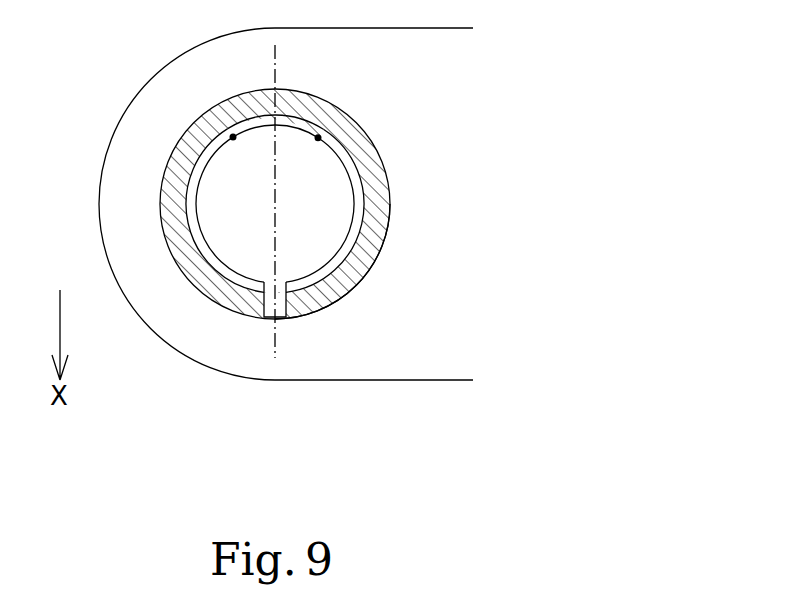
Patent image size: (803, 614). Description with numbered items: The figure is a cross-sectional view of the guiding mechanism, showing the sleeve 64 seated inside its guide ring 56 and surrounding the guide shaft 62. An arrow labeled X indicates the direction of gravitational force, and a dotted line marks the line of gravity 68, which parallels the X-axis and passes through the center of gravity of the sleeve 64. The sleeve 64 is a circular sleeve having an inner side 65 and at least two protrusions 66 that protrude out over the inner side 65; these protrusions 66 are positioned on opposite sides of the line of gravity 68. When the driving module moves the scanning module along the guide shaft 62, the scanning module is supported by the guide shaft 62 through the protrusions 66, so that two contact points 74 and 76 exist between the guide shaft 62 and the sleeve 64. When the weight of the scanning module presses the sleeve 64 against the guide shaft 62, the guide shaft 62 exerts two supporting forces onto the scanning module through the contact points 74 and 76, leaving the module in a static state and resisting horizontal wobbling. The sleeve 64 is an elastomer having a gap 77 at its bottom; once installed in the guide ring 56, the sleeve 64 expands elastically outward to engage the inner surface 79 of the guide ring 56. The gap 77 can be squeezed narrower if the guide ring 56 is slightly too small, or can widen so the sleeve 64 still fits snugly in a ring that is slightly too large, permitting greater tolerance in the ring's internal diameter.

The guide ring 56 is at (143, 127).
The guide shaft 62 is at (327, 249).
The sleeve 64 is at (392, 212).
The inner side 65 is at (162, 220).
The protrusions 66 is at (232, 126).
The line of gravity 68 is at (277, 63).
The contact point 74 is at (318, 141).
The contact point 76 is at (233, 140).
The gap 77 is at (280, 321).
The inner surface 79 is at (365, 272).